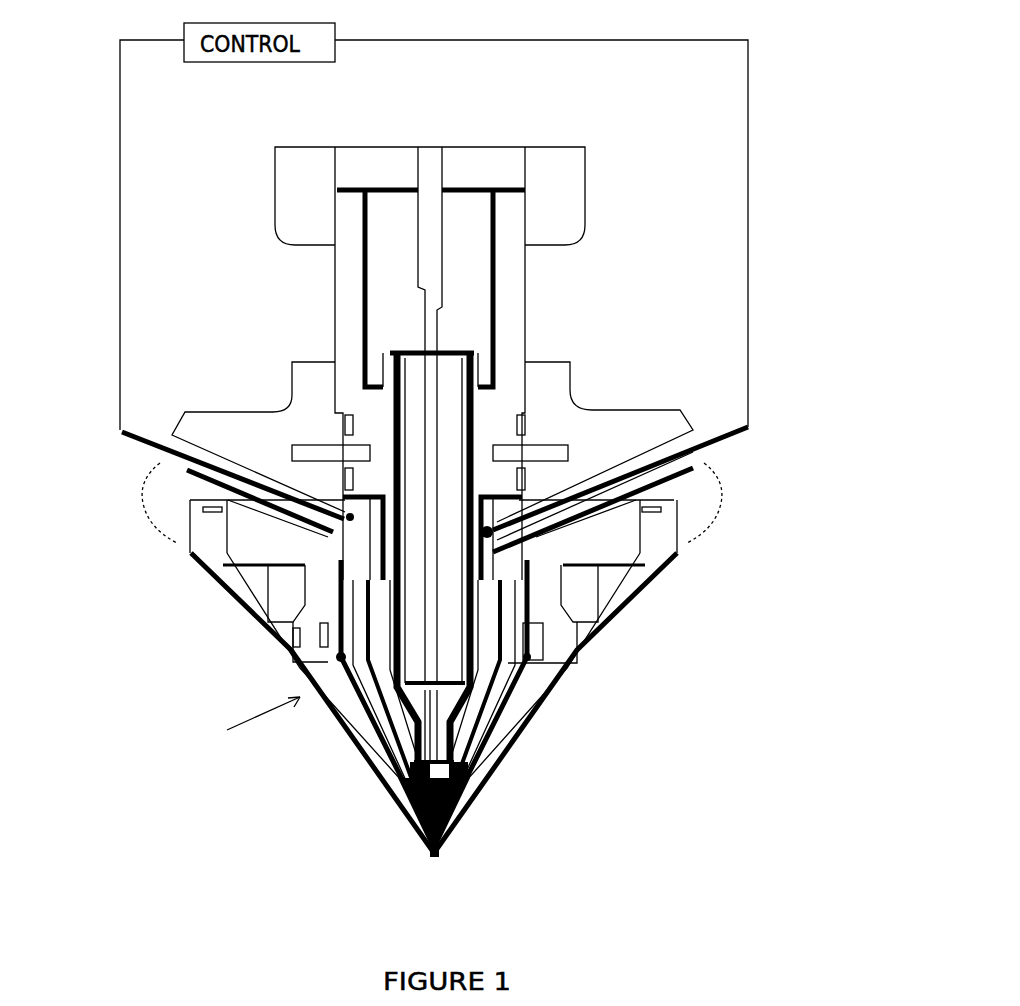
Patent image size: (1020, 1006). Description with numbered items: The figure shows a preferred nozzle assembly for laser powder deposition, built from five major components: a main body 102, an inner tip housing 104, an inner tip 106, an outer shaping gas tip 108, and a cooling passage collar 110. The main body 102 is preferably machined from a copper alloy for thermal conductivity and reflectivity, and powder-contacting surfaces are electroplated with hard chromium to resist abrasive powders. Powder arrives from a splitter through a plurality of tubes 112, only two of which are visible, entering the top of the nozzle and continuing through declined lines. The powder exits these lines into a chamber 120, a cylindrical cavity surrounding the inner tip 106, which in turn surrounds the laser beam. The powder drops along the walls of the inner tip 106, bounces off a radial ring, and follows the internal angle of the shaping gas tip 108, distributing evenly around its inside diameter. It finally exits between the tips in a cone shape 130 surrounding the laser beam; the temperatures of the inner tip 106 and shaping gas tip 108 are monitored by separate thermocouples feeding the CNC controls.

The main body 102 is at (240, 412).
The inner tip housing 104 is at (512, 296).
The inner tip 106 is at (455, 723).
The outer shaping gas tip 108 is at (527, 705).
The cooling passage collar 110 is at (232, 577).
The tubes 112 is at (706, 452).
The chamber 120 is at (477, 707).
The cone shape 130 is at (462, 832).